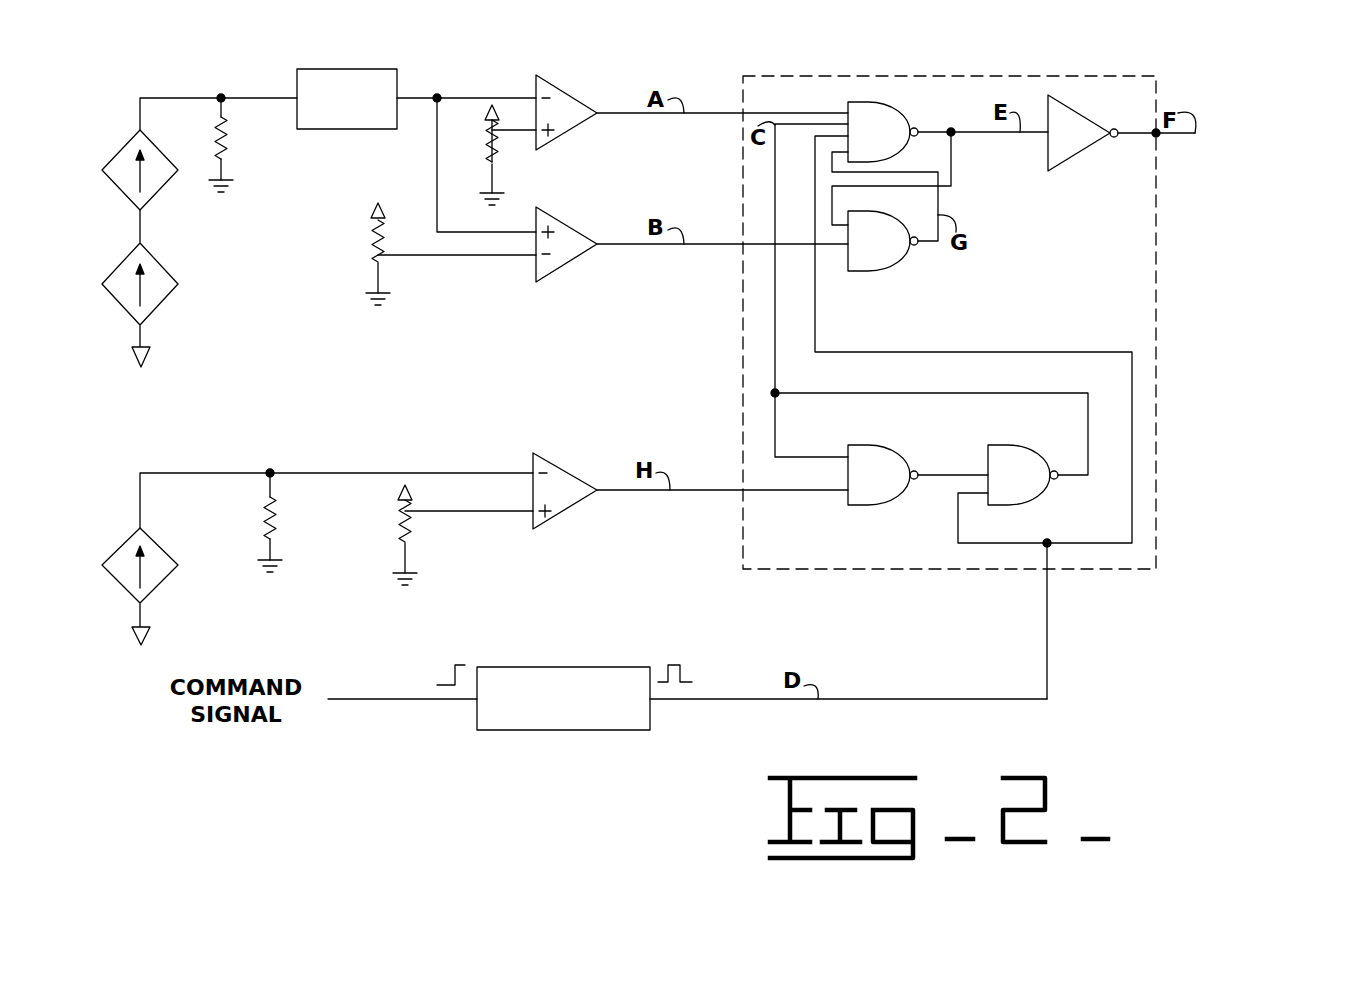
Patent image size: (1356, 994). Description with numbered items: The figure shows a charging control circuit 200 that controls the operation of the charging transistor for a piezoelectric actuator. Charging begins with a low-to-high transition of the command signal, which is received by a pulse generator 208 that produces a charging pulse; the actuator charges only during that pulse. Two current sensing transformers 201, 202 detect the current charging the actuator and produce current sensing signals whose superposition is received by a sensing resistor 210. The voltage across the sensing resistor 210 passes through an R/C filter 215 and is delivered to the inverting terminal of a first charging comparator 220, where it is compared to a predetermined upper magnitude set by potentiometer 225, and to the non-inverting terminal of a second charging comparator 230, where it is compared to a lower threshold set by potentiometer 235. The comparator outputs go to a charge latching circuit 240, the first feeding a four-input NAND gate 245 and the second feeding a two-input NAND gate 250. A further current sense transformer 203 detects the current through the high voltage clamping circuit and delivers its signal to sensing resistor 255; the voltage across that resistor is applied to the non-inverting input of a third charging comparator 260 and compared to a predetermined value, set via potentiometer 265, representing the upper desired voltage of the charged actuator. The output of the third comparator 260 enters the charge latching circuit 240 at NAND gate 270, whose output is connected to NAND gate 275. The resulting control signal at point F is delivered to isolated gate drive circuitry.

The charging control circuit 200 is at (1243, 105).
The current sensing transformer 201 is at (132, 136).
The current sensing transformer 202 is at (132, 250).
The current sense transformer 203 is at (133, 531).
The pulse generator 208 is at (583, 667).
The sensing resistor 210 is at (228, 150).
The R/C filter 215 is at (303, 69).
The first charging comparator 220 is at (551, 84).
The potentiometer 225 is at (497, 159).
The second charging comparator 230 is at (550, 216).
The potentiometer 235 is at (373, 252).
The charge latching circuit 240 is at (843, 76).
The four-input NAND gate 245 is at (884, 106).
The two-input NAND gate 250 is at (880, 270).
The sensing resistor 255 is at (266, 526).
The third charging comparator 260 is at (548, 462).
The potentiometer 265 is at (407, 542).
The NAND gate 270 is at (885, 446).
The NAND gate 275 is at (1003, 505).